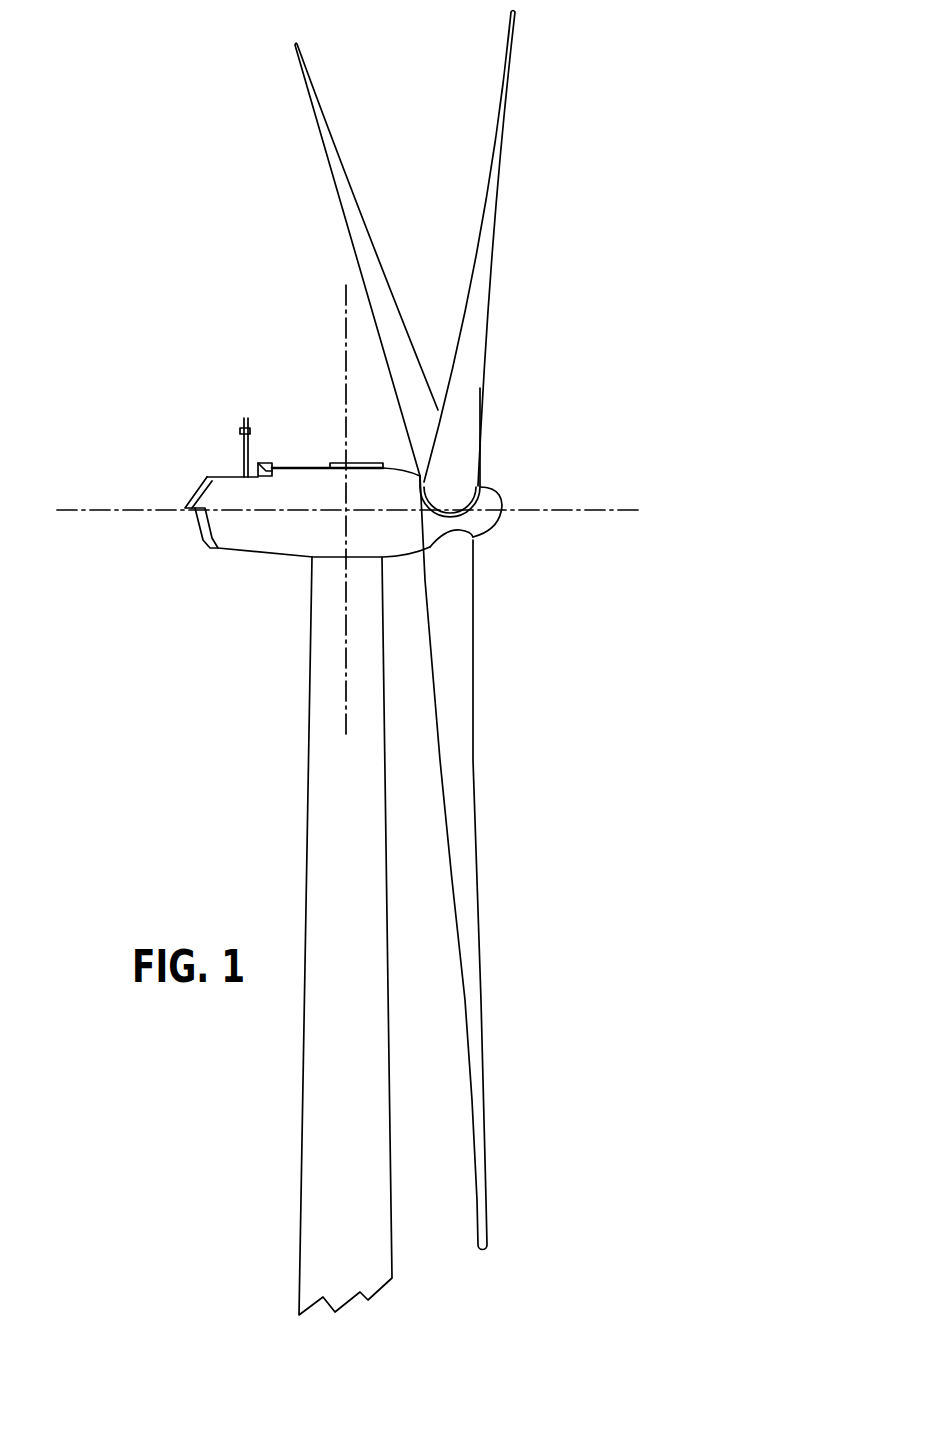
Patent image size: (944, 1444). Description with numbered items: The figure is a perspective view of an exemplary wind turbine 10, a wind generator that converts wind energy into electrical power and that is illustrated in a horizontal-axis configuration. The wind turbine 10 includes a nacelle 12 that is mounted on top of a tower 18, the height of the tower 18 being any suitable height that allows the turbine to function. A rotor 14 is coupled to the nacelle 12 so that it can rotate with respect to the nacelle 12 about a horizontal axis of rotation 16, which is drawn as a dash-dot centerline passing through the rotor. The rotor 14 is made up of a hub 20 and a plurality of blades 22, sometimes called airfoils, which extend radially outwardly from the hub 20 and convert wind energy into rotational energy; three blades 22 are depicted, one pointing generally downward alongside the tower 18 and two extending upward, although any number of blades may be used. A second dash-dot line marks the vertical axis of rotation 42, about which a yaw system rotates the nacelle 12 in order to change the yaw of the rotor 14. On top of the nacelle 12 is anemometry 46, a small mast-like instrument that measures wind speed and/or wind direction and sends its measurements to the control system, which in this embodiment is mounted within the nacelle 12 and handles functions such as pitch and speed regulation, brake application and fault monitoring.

The wind turbine 10 is at (148, 199).
The nacelle 12 is at (231, 561).
The rotor 14 is at (493, 578).
The axis of rotation 16 is at (598, 512).
The tower 18 is at (307, 803).
The hub 20 is at (488, 530).
The blades 22 is at (342, 163).
The axis of rotation 42 is at (347, 318).
The anemometry 46 is at (240, 432).